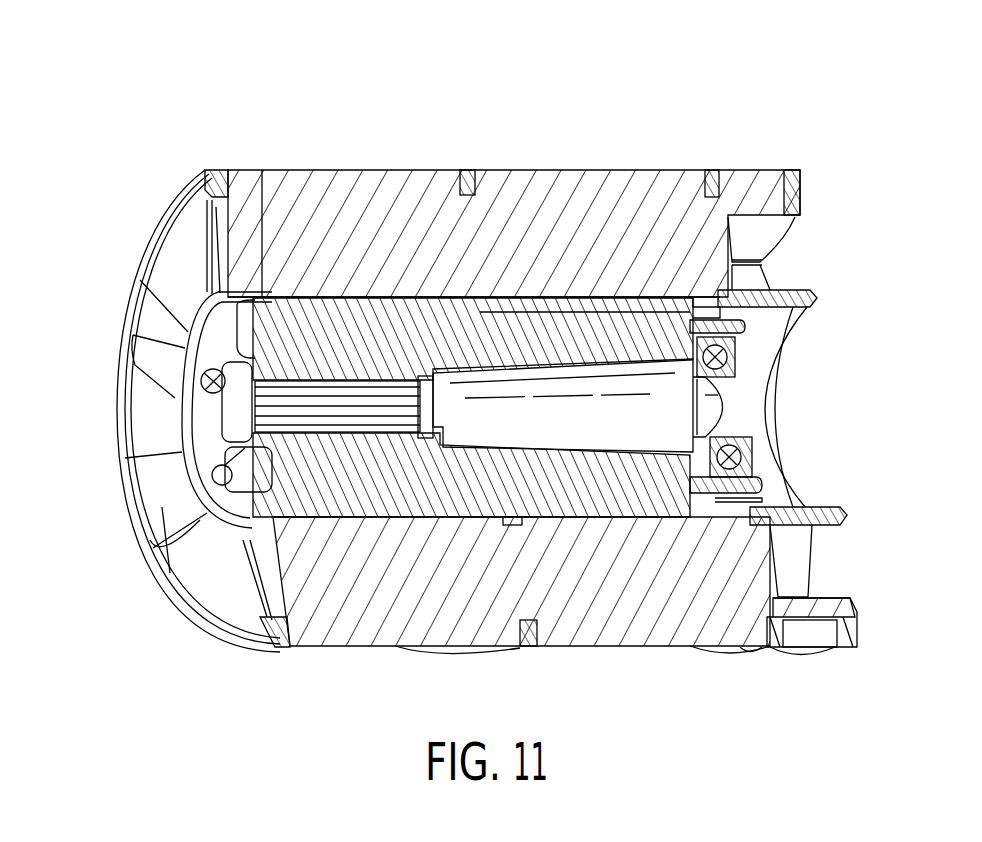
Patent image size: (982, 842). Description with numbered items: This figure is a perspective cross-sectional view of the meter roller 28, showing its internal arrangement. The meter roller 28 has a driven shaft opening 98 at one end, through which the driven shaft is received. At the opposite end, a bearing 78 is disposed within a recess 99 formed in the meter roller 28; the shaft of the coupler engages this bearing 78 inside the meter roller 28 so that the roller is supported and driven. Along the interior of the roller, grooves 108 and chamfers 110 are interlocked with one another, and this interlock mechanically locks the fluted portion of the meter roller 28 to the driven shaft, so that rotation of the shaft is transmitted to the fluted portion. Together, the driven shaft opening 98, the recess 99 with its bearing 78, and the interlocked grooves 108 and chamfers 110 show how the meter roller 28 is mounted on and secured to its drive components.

The meter roller 28 is at (458, 355).
The grooves 108 is at (331, 297).
The chamfers 110 is at (607, 314).
The bearing 78 is at (717, 357).
The recess 99 is at (712, 412).
The driven shaft opening 98 is at (250, 415).